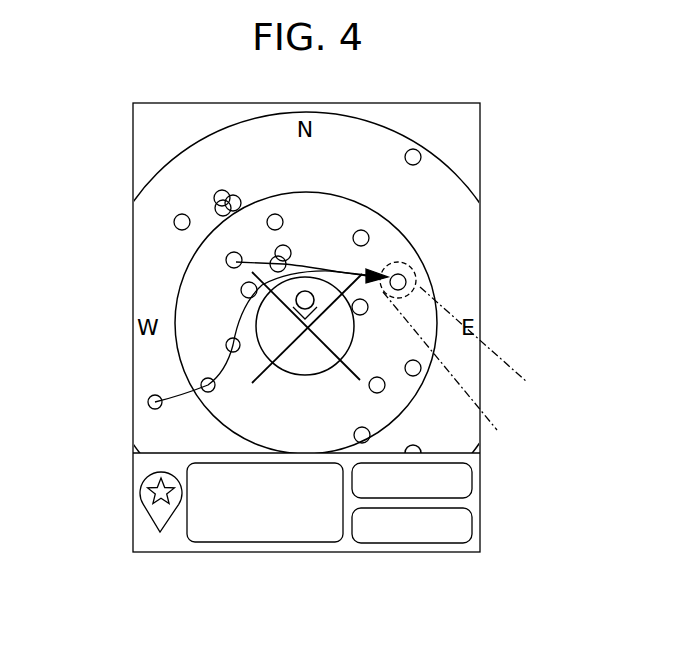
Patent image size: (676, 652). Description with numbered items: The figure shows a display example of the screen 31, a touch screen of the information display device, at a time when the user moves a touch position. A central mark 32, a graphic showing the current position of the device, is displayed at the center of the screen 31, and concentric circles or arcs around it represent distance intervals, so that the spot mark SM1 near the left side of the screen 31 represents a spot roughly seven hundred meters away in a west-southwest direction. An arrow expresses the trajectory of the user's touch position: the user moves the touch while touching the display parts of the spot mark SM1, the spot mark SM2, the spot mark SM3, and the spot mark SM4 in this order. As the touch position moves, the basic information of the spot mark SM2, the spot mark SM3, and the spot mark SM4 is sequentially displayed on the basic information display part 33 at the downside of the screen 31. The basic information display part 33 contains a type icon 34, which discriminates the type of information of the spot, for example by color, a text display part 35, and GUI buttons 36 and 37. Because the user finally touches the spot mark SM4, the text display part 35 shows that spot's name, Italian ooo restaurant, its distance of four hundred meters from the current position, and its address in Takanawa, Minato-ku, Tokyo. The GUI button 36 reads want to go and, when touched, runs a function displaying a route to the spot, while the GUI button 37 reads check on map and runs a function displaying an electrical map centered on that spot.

The screen 31 is at (481, 160).
The central mark 32 is at (234, 262).
The basic information display part 33 is at (453, 454).
The type icon 34 is at (157, 536).
The text display part 35 is at (264, 543).
The GUI button 36 is at (473, 478).
The GUI button 37 is at (473, 521).
The spot mark SM1 is at (148, 402).
The spot mark SM2 is at (208, 378).
The spot mark SM3 is at (228, 338).
The spot mark SM4 is at (416, 277).